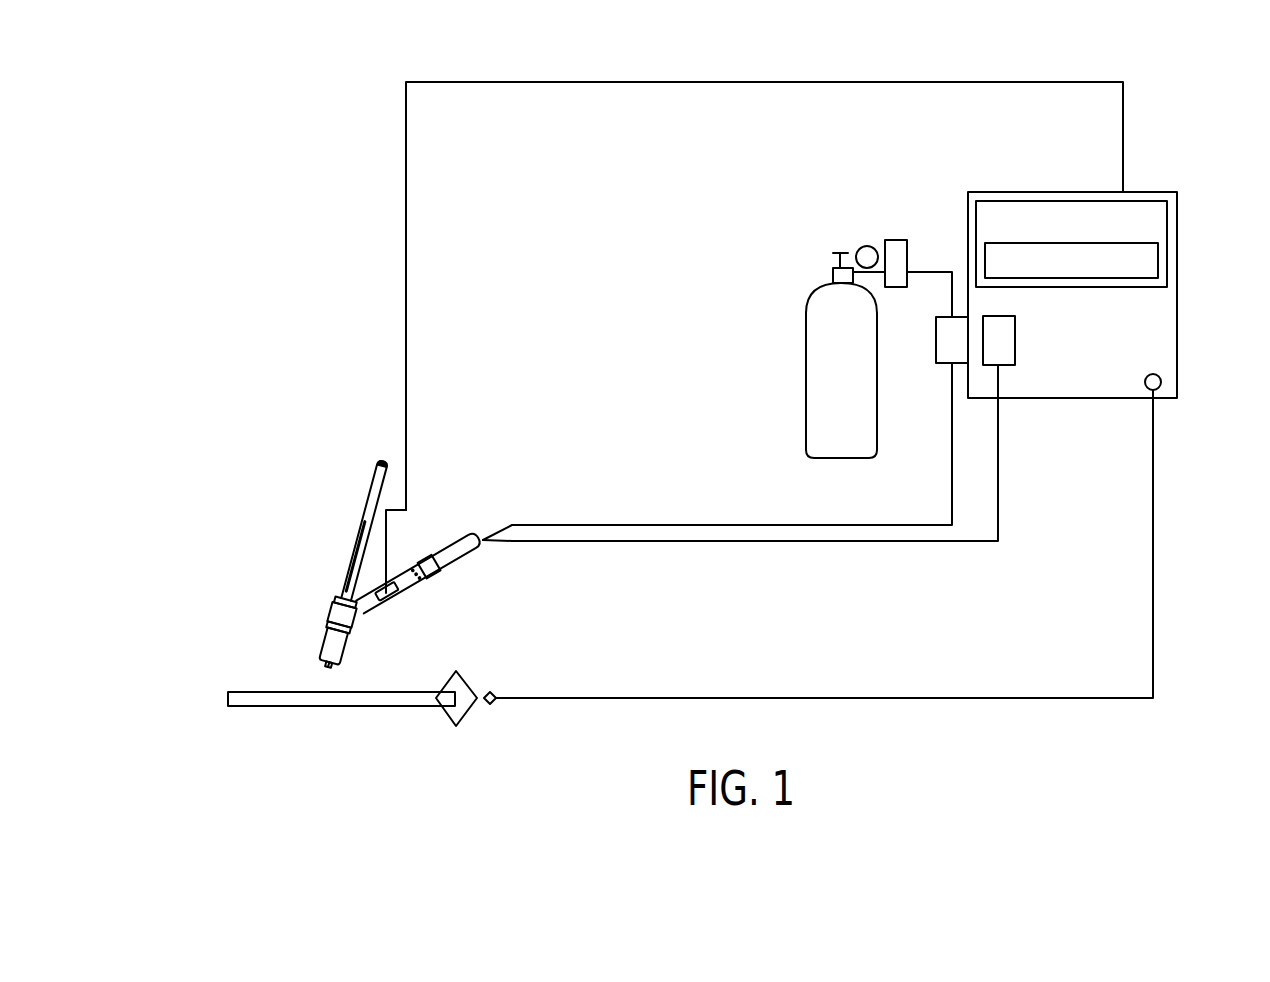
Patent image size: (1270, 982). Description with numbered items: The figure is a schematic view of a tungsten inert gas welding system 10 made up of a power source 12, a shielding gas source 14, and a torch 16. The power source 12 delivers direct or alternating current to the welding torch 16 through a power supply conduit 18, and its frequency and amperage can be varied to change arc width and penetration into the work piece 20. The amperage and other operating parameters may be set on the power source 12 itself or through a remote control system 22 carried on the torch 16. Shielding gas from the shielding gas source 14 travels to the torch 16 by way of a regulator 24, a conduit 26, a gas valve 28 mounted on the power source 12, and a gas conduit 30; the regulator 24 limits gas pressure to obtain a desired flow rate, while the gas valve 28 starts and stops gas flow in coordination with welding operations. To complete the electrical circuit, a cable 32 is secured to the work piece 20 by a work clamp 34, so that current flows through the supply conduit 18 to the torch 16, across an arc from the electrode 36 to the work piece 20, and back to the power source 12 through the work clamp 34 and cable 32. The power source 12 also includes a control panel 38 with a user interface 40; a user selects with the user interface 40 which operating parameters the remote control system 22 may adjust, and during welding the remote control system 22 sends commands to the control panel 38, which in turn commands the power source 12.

The welding system 10 is at (255, 100).
The power source 12 is at (1058, 380).
The shielding gas source 14 is at (828, 396).
The torch 16 is at (430, 495).
The power supply conduit 18 is at (758, 543).
The work piece 20 is at (342, 706).
The remote control system 22 is at (391, 597).
The regulator 24 is at (867, 246).
The conduit 26 is at (928, 272).
The gas valve 28 is at (936, 340).
The gas conduit 30 is at (735, 525).
The cable 32 is at (822, 698).
The work clamp 34 is at (470, 712).
The electrode 36 is at (326, 665).
The control panel 38 is at (1140, 201).
The user interface 40 is at (1158, 262).